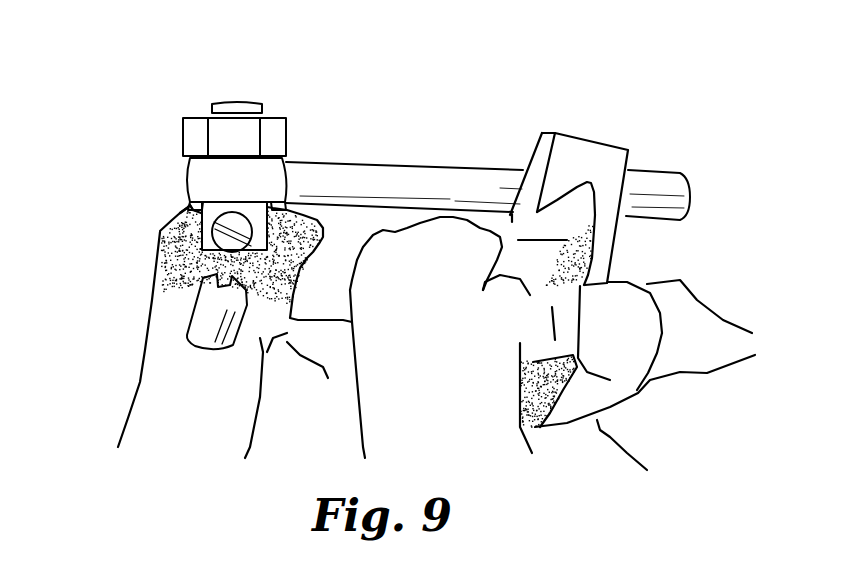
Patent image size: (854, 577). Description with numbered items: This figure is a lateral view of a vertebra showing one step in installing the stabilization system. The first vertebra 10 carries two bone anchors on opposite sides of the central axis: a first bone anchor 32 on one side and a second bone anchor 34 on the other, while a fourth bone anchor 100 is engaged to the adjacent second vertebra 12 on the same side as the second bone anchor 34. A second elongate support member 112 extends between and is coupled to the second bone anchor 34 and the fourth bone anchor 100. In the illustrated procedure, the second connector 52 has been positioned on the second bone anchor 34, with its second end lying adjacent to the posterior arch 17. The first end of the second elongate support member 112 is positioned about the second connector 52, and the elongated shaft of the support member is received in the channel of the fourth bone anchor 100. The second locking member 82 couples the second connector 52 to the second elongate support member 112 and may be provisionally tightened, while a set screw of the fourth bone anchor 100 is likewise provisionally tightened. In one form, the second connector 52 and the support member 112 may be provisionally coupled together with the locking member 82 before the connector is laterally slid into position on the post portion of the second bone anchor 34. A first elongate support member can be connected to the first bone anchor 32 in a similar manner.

The first vertebra 10 is at (112, 425).
The second vertebra 12 is at (677, 265).
The posterior arch 17 is at (158, 237).
The first bone anchor 32 is at (193, 306).
The second bone anchor 34 is at (232, 232).
The second connector 52 is at (173, 213).
The second locking member 82 is at (188, 125).
The fourth bone anchor 100 is at (533, 136).
The second elongate support member 112 is at (418, 166).